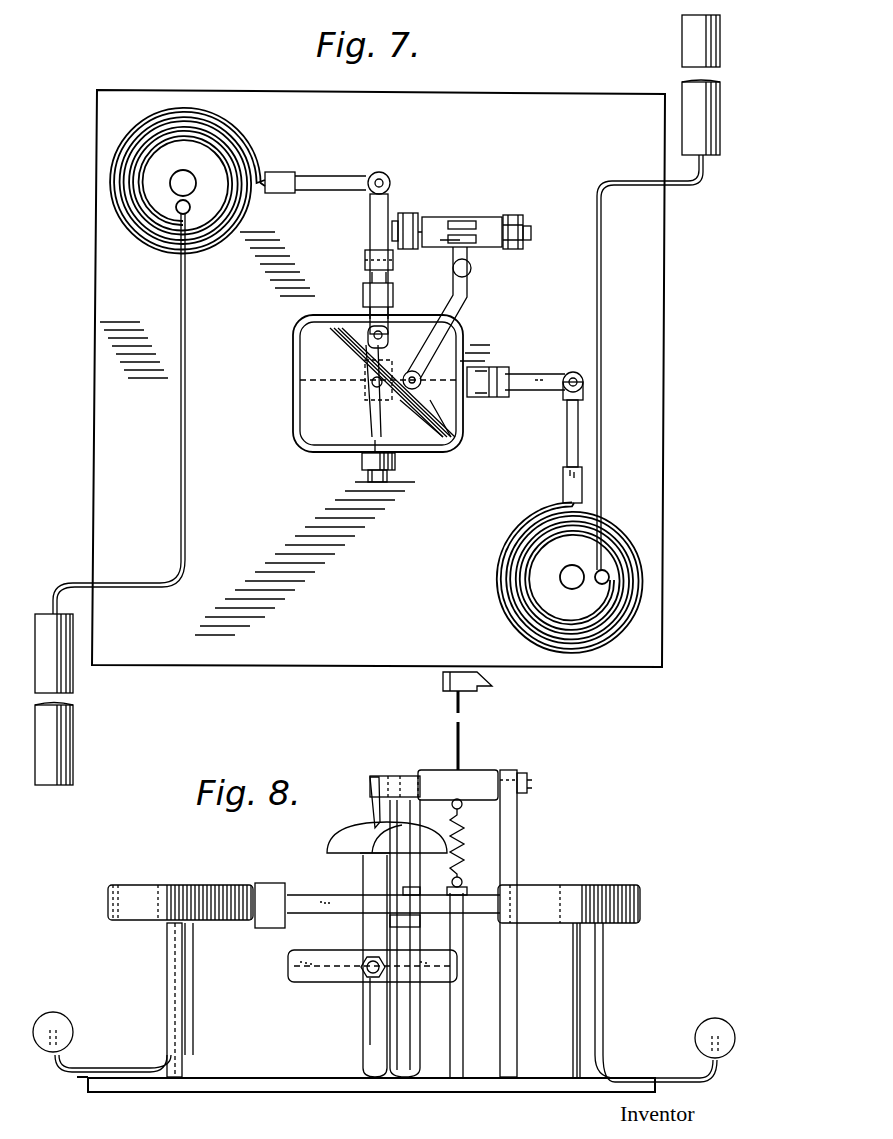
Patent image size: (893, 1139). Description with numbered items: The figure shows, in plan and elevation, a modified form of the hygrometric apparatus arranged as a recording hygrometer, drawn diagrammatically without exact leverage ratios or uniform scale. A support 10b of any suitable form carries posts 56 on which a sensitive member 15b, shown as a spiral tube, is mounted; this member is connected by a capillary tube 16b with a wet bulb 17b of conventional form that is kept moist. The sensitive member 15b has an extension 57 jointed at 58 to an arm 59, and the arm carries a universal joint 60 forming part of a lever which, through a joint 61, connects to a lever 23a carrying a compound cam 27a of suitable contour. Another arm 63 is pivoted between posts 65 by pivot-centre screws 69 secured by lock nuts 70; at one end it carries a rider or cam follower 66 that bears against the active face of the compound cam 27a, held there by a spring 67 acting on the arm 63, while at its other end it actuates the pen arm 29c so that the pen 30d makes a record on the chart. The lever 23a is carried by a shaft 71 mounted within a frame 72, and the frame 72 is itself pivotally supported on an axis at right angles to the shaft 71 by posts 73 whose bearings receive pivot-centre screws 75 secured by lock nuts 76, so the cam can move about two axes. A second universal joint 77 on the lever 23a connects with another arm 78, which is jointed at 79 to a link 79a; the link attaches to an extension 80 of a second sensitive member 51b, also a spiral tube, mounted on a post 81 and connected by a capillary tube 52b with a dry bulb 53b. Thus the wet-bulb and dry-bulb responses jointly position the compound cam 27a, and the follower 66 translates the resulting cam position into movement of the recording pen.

In FIG. 7, the support 10b is at (650, 270).
In FIG. 8, the support 10b is at (242, 1086).
In FIG. 7, the sensitive member 15b is at (665, 588).
In FIG. 8, the sensitive member 15b is at (636, 888).
In FIG. 7, the capillary tube 16b is at (614, 421).
In FIG. 8, the capillary tube 16b is at (604, 1029).
In FIG. 7, the wet bulb 17b is at (722, 60).
In FIG. 8, the wet bulb 17b is at (713, 1022).
In FIG. 7, the lever 23a is at (362, 410).
In FIG. 8, the lever 23a is at (362, 877).
In FIG. 7, the compound cam 27a is at (440, 425).
In FIG. 8, the compound cam 27a is at (345, 840).
In FIG. 8, the pen arm 29c is at (462, 729).
In FIG. 8, the pen 30d is at (480, 682).
In FIG. 7, the second sensitive member 51b is at (240, 248).
In FIG. 8, the second sensitive member 51b is at (118, 900).
In FIG. 7, the capillary tube 52b is at (187, 368).
In FIG. 8, the capillary tube 52b is at (184, 976).
In FIG. 7, the dry bulb 53b is at (75, 694).
In FIG. 8, the dry bulb 53b is at (52, 1014).
In FIG. 7, the posts 56 is at (566, 584).
In FIG. 8, the posts 56 is at (580, 985).
In FIG. 7, the extension 57 is at (562, 483).
In FIG. 7, the joint 58 is at (584, 380).
In FIG. 7, the arm 59 is at (540, 374).
In FIG. 7, the universal joint 60 is at (500, 398).
In FIG. 7, the joint 61 is at (420, 378).
In FIG. 8, the joint 61 is at (408, 898).
In FIG. 7, the arm 63 is at (468, 298).
In FIG. 8, the arm 63 is at (375, 775).
In FIG. 7, the posts 65 is at (420, 216).
In FIG. 8, the posts 65 is at (405, 1031).
In FIG. 8, the rider or cam follower 66 is at (371, 806).
In FIG. 8, the spring 67 is at (463, 840).
In FIG. 7, the screws 69 is at (524, 222).
In FIG. 8, the screws 69 is at (530, 786).
In FIG. 7, the lock nuts 70 is at (527, 243).
In FIG. 8, the lock nuts 70 is at (528, 778).
In FIG. 7, the shaft 71 is at (345, 390).
In FIG. 8, the shaft 71 is at (300, 956).
In FIG. 7, the frame 72 is at (300, 452).
In FIG. 8, the frame 72 is at (330, 983).
In FIG. 7, the posts 73 is at (368, 472).
In FIG. 8, the posts 73 is at (366, 1046).
In FIG. 7, the screws 75 is at (386, 479).
In FIG. 8, the screws 75 is at (370, 978).
In FIG. 7, the lock nuts 76 is at (396, 463).
In FIG. 8, the lock nuts 76 is at (374, 976).
In FIG. 7, the universal joint 77 is at (386, 332).
In FIG. 7, the arm 78 is at (363, 296).
In FIG. 7, the joint 79 is at (365, 262).
In FIG. 7, the link 79a is at (370, 210).
In FIG. 7, the extension 80 is at (335, 176).
In FIG. 8, the extension 80 is at (343, 915).
In FIG. 7, the post 81 is at (180, 180).
In FIG. 8, the post 81 is at (167, 951).